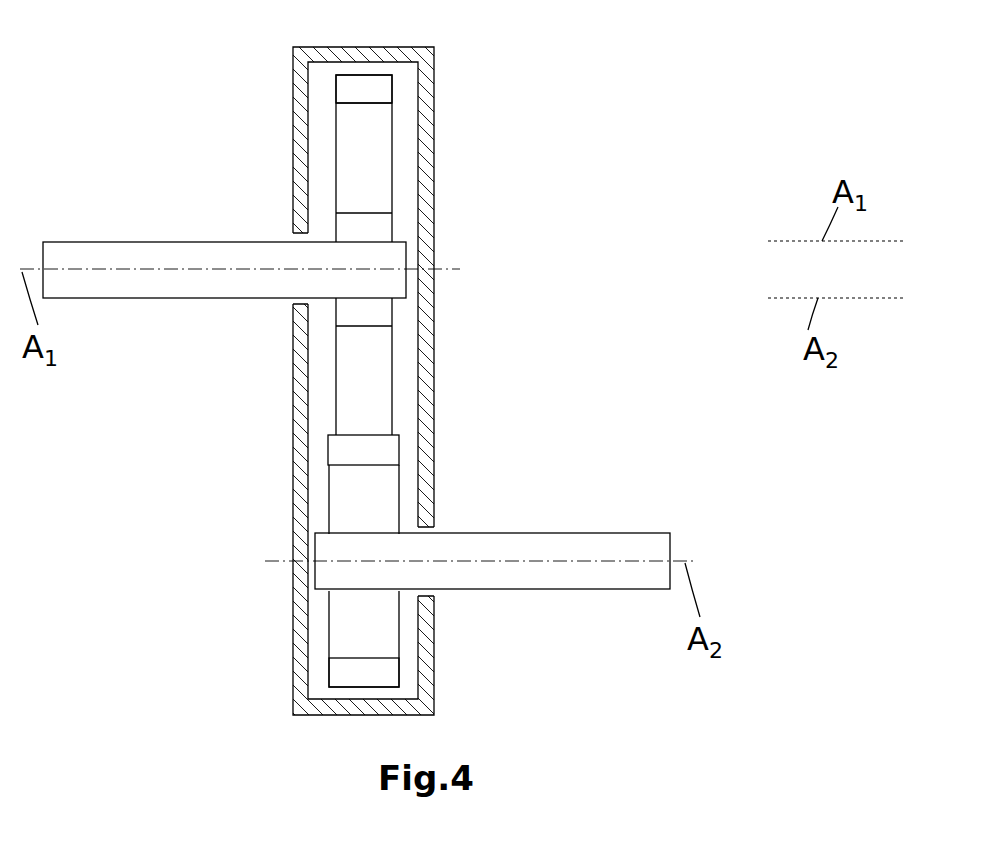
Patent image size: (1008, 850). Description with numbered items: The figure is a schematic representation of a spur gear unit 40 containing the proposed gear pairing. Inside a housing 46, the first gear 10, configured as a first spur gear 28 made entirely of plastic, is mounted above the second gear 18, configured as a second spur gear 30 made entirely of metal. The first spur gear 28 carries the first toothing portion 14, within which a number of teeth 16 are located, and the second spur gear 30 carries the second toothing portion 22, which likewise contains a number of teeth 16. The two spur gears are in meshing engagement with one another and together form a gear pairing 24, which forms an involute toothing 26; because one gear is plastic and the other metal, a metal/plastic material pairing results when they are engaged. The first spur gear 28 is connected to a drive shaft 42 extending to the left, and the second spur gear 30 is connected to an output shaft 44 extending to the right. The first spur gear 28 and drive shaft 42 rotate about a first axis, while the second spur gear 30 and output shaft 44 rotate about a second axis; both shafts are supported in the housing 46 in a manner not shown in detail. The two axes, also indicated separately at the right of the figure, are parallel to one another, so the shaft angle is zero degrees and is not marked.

The first gear 10 is at (291, 255).
The first spur gear 28 is at (350, 145).
The first toothing portion 14 is at (449, 71).
The teeth 16 is at (380, 88).
The second gear 18 is at (281, 576).
The second spur gear 30 is at (342, 610).
The second toothing portion 22 is at (377, 668).
The gear pairing 24 is at (446, 411).
The involute toothing 26 is at (412, 414).
The spur gear unit 40 is at (650, 116).
The drive shaft 42 is at (75, 242).
The output shaft 44 is at (565, 534).
The housing 46 is at (434, 148).